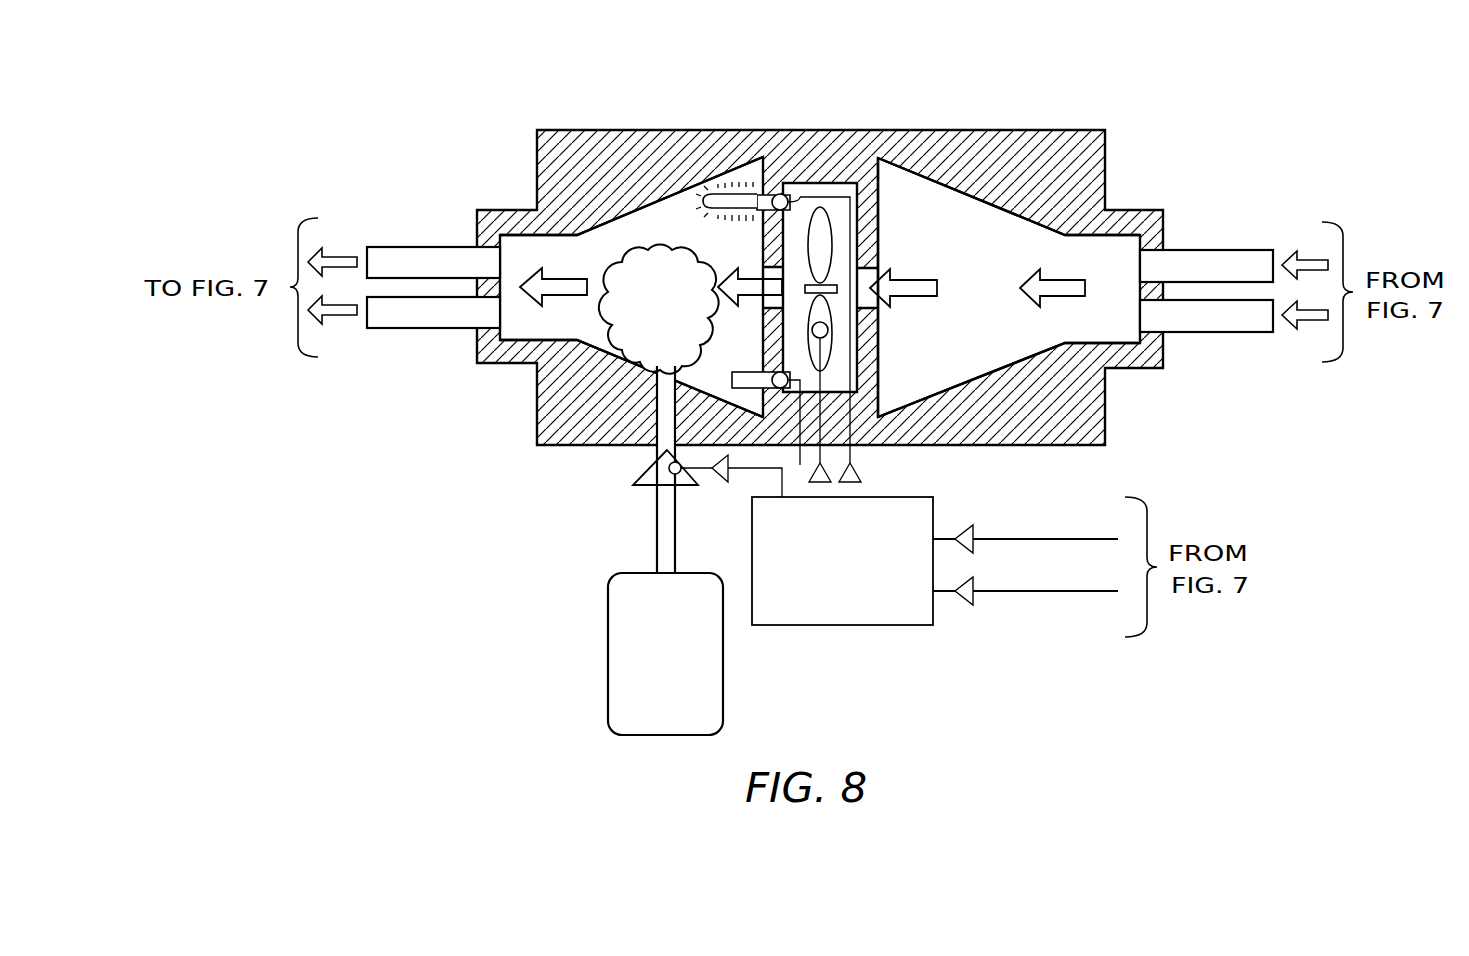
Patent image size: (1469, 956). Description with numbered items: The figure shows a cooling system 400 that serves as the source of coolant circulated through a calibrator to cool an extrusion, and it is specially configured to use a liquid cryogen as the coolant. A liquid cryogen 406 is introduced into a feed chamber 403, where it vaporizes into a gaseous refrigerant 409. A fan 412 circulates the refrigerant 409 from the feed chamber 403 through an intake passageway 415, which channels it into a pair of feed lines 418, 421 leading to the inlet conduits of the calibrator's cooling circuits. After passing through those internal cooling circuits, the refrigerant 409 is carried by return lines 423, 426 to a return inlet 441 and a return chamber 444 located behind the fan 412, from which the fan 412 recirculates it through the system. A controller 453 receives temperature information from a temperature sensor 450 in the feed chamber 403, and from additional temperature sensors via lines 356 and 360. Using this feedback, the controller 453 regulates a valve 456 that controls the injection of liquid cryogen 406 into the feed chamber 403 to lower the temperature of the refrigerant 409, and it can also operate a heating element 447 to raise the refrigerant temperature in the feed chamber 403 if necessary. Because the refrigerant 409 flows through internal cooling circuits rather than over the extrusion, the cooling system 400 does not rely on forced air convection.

The cooling system 400 is at (1150, 138).
The feed chamber 403 is at (613, 247).
The liquid cryogen 406 is at (608, 674).
The gaseous refrigerant 409 is at (657, 277).
The fan 412 is at (822, 242).
The intake passageway 415 is at (515, 270).
The feed line 418 is at (400, 245).
The feed line 421 is at (411, 330).
The return line 423 is at (1210, 250).
The return line 426 is at (1215, 332).
The return inlet 441 is at (1118, 292).
The return chamber 444 is at (968, 345).
The heating element 447 is at (703, 210).
The temperature sensor 450 is at (748, 372).
The controller 453 is at (872, 626).
The valve 456 is at (636, 470).
The line 356 is at (1022, 539).
The line 360 is at (1015, 591).